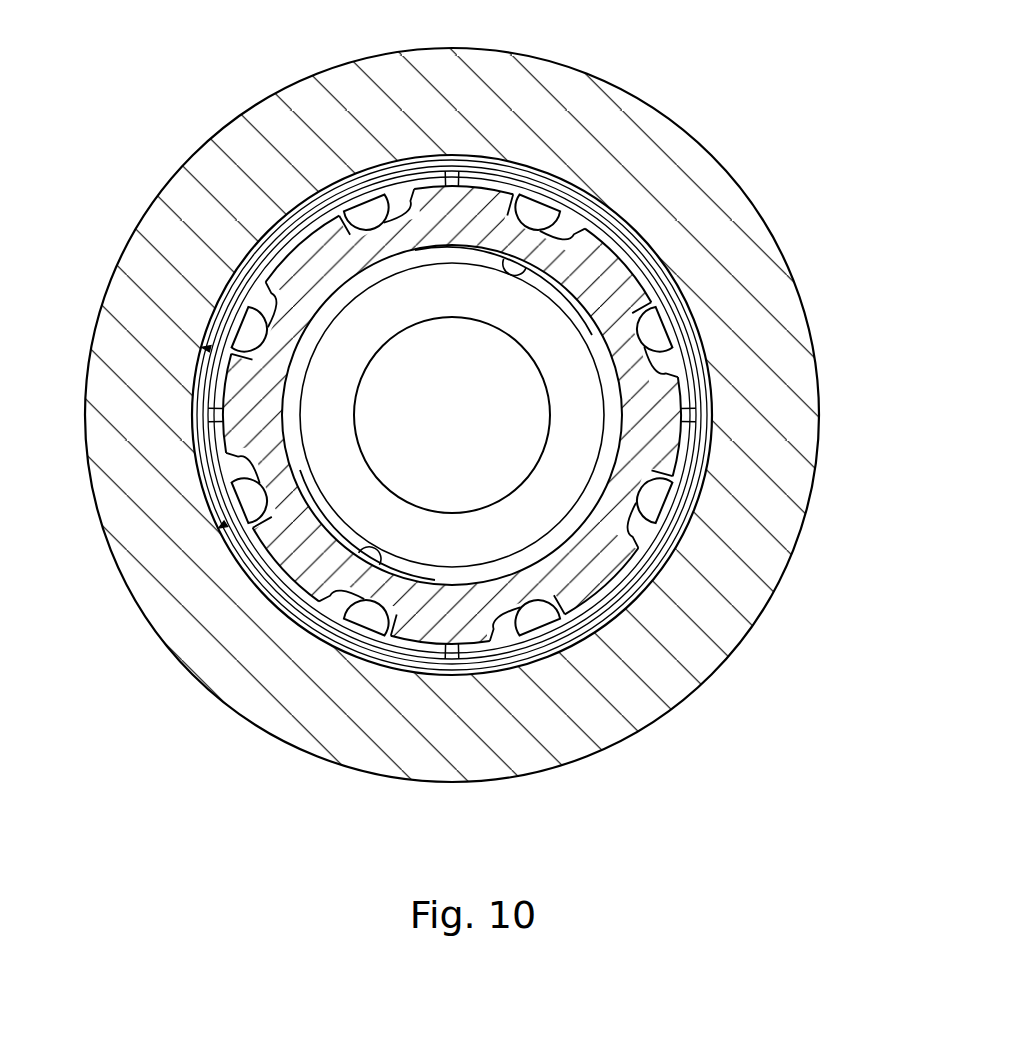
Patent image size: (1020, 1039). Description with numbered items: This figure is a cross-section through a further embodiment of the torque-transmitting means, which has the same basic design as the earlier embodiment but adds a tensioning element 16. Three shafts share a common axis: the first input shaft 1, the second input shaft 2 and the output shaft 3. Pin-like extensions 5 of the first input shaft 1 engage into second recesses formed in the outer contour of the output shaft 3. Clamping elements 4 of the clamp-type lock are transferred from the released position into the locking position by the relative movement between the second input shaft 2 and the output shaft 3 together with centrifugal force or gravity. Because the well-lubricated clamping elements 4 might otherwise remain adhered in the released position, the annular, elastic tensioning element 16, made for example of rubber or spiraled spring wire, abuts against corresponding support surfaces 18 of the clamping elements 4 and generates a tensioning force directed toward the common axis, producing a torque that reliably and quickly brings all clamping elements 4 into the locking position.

The first input shaft 1 is at (522, 330).
The second input shaft 2 is at (643, 708).
The output shaft 3 is at (660, 590).
The clamping elements 4 is at (333, 210).
The pin-like extensions 5 is at (422, 182).
The tensioning element 16 is at (600, 235).
The support surfaces 18 is at (220, 527).